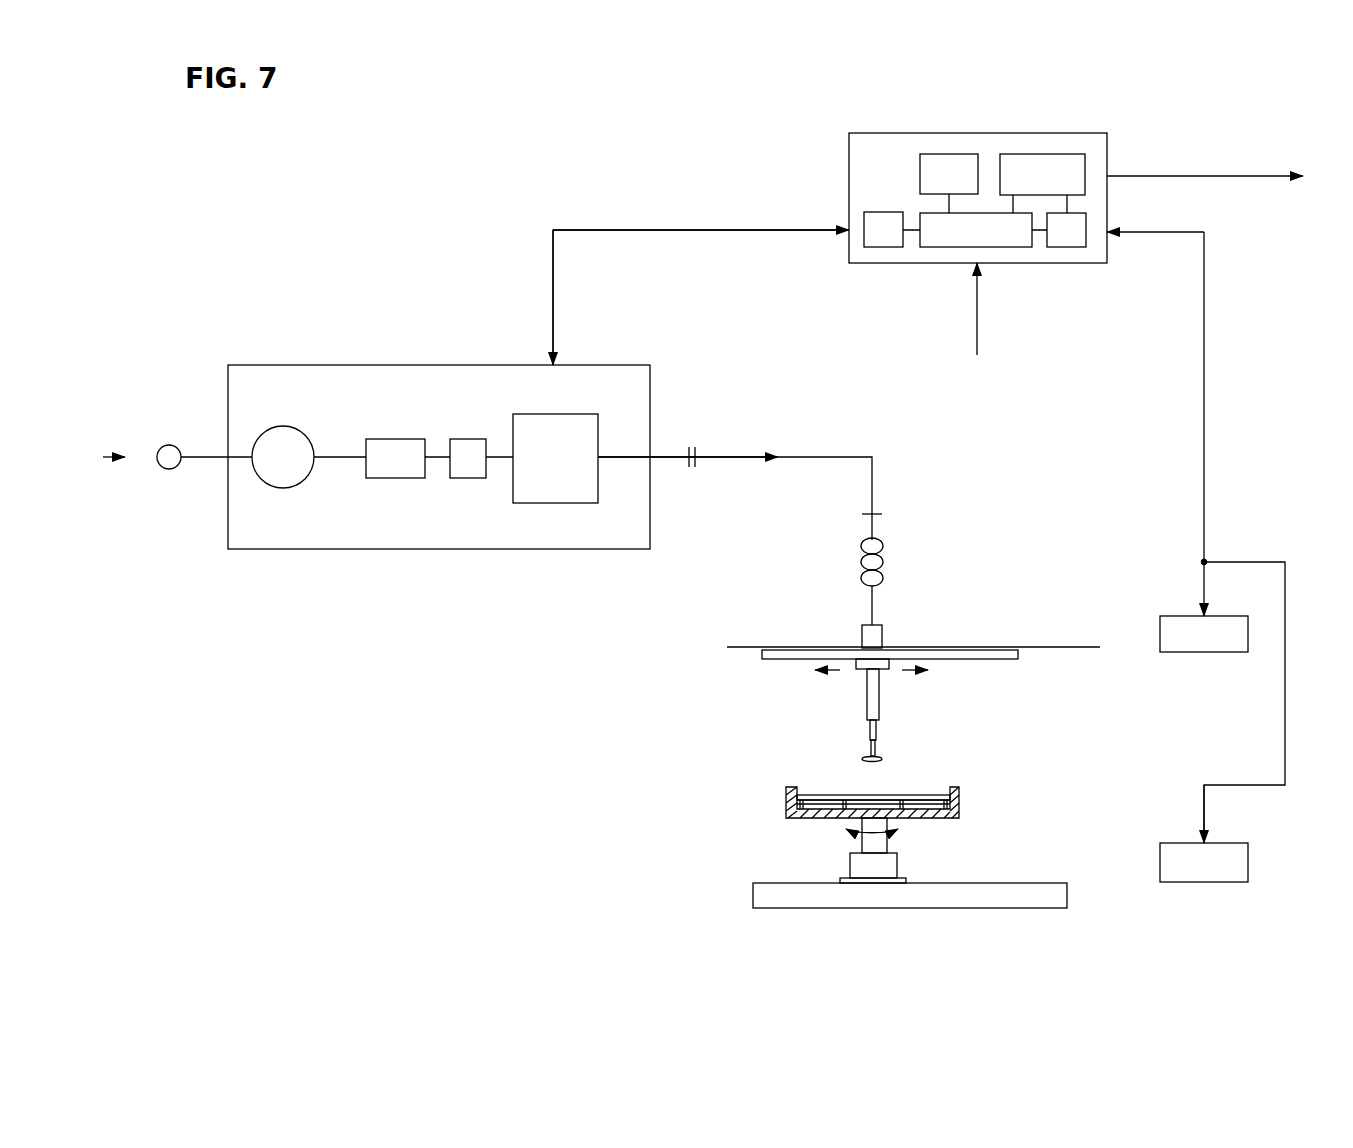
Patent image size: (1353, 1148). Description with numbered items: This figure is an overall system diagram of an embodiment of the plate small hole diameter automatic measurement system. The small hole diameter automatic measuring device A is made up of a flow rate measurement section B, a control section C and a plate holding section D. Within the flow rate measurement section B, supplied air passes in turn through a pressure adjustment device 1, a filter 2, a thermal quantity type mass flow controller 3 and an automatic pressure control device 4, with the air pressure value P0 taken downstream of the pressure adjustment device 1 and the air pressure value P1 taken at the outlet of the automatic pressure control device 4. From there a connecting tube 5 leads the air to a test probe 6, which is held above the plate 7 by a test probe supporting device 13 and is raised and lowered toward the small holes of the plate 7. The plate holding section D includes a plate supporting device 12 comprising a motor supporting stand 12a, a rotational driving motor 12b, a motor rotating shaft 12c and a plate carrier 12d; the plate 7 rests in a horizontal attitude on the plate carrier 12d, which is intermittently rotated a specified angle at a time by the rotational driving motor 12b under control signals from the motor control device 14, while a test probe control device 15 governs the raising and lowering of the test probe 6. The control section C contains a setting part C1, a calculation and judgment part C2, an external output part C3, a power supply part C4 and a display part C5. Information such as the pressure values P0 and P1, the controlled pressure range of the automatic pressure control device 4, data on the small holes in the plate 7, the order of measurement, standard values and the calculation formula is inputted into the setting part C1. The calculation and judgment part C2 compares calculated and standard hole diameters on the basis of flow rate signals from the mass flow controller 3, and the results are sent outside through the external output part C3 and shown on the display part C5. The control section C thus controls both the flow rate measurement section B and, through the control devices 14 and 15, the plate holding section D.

The small hole diameter automatic measuring device A is at (432, 188).
The flow rate measurement section B is at (353, 352).
The control section C is at (822, 160).
The plate holding section D is at (706, 760).
The pressure adjustment device 1 is at (283, 426).
The filter 2 is at (397, 439).
The thermal quantity type mass flow controller 3 is at (459, 439).
The automatic pressure control device 4 is at (513, 426).
The connecting tube 5 is at (883, 562).
The test probe 6 is at (883, 759).
The plate 7 is at (833, 795).
The plate supporting device 12 is at (800, 863).
The motor supporting stand 12a is at (833, 900).
The rotational driving motor 12b is at (885, 865).
The motor rotating shaft 12c is at (846, 835).
The plate carrier 12d is at (960, 804).
The test probe supporting device 13 is at (808, 692).
The motor control device 14 is at (1170, 843).
The test probe control device 15 is at (1187, 654).
The setting part C1 is at (948, 247).
The calculation and judgment part C2 is at (950, 154).
The external output part C3 is at (1047, 154).
The power supply part C4 is at (883, 247).
The display part C5 is at (1063, 247).
The air pressure value P0 is at (338, 457).
The air pressure value P1 is at (628, 457).